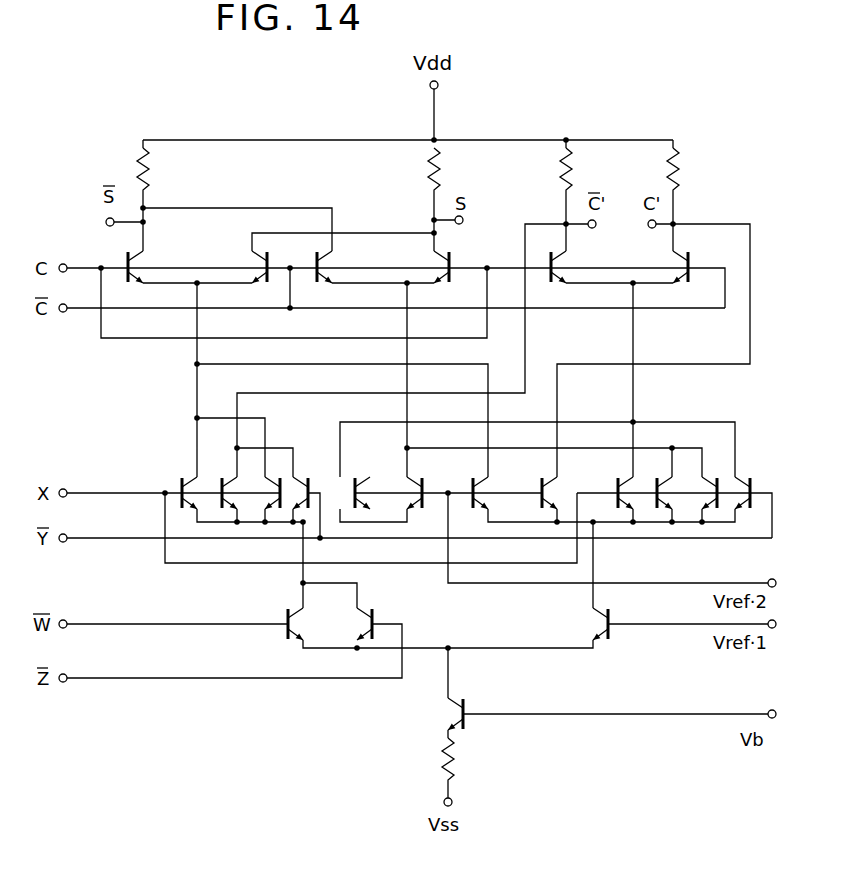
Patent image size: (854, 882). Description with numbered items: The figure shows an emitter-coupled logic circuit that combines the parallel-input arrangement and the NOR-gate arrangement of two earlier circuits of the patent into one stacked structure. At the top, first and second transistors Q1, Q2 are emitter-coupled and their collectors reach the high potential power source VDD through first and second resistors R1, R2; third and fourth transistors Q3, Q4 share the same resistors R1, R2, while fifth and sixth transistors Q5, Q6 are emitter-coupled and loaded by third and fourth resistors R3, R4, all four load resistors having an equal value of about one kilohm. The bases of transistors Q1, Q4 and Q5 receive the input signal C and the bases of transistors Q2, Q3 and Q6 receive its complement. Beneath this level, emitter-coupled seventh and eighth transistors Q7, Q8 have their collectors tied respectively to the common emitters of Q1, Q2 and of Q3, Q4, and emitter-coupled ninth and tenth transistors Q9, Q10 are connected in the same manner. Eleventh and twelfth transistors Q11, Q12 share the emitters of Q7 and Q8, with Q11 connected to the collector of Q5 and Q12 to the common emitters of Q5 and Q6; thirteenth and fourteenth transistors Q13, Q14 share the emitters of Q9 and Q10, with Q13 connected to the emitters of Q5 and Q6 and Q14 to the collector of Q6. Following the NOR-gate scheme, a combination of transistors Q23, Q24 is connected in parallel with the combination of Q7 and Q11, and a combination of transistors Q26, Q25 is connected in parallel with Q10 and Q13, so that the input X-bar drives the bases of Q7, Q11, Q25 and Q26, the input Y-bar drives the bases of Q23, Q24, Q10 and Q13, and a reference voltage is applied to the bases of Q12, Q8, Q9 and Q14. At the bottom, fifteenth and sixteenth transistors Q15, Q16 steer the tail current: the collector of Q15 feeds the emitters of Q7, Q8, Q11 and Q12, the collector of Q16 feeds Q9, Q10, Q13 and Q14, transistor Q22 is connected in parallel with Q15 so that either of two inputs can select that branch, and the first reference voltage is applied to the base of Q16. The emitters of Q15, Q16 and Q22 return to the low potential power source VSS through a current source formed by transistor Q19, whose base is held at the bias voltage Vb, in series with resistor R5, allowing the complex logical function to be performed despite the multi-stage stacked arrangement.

The first resistor R1 is at (147, 177).
The second resistor R2 is at (428, 174).
The third resistor R3 is at (560, 174).
The fourth resistor R4 is at (679, 177).
The resistor R5 is at (438, 760).
The first transistor Q1 is at (138, 270).
The second transistor Q2 is at (252, 269).
The third transistor Q3 is at (328, 270).
The fourth transistor Q4 is at (435, 269).
The fifth transistor Q5 is at (563, 270).
The sixth transistor Q6 is at (672, 269).
The seventh transistor Q7 is at (175, 478).
The eighth transistor Q8 is at (407, 486).
The ninth transistor Q9 is at (469, 481).
The tenth transistor Q10 is at (718, 472).
The eleventh transistor Q11 is at (219, 479).
The twelfth transistor Q12 is at (350, 478).
The thirteenth transistor Q13 is at (752, 490).
The fourteenth transistor Q14 is at (537, 481).
The fifteenth transistor Q15 is at (296, 606).
The sixteenth transistor Q16 is at (604, 622).
The transistor Q19 is at (447, 714).
The transistor Q22 is at (360, 608).
The transistor Q23 is at (275, 466).
The transistor Q24 is at (302, 478).
The transistor Q25 is at (614, 481).
The transistor Q26 is at (666, 512).